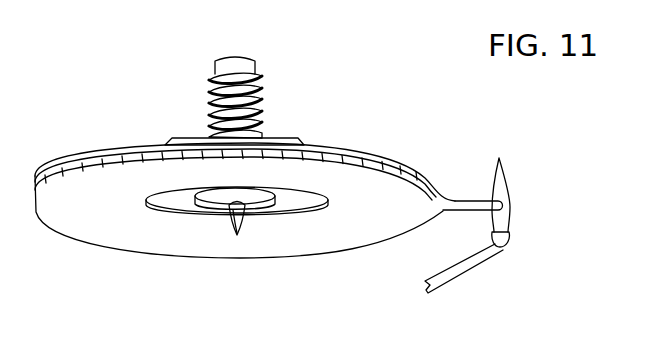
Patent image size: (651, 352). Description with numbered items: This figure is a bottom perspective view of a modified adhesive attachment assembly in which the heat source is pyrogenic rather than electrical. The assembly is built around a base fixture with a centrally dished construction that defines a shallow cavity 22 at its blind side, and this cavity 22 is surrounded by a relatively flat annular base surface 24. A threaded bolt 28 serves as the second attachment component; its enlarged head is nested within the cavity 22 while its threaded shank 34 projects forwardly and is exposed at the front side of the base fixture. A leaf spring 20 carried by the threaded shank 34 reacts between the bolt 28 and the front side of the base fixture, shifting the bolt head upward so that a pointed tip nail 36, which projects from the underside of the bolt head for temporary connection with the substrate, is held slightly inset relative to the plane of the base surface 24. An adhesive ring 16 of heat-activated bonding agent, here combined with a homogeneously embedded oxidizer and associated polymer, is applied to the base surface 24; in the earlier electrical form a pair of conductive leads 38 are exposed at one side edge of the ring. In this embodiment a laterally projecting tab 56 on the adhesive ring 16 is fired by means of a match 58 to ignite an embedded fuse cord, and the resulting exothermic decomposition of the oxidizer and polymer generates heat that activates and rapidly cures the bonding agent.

The adhesive ring 16 is at (375, 162).
The leaf spring 20 is at (282, 138).
The cavity 22 is at (297, 212).
The base surface 24 is at (78, 206).
The threaded bolt 28 is at (262, 73).
The threaded shank 34 is at (213, 107).
The pointed tip nail 36 is at (236, 229).
The conductive leads 38 is at (105, 163).
The laterally projecting tab 56 is at (470, 200).
The match 58 is at (470, 262).